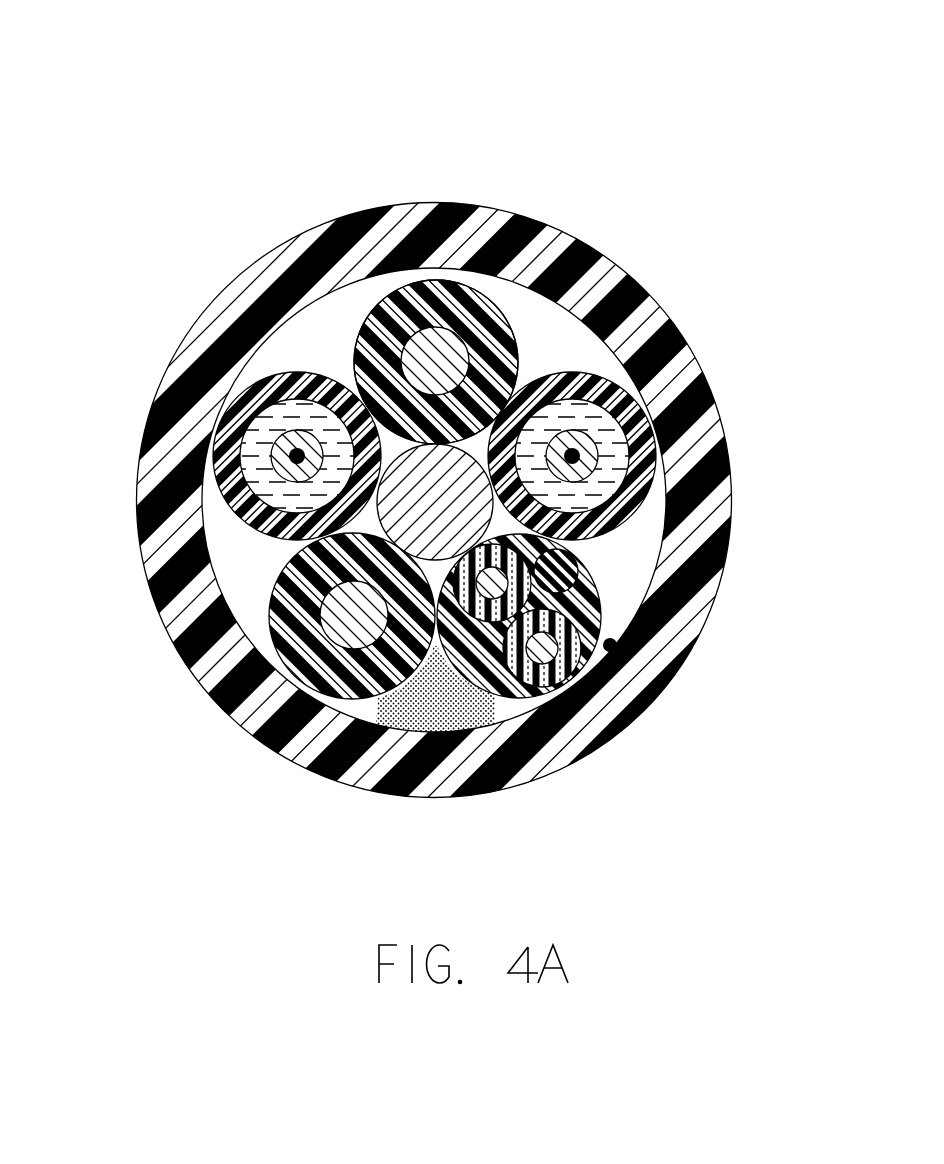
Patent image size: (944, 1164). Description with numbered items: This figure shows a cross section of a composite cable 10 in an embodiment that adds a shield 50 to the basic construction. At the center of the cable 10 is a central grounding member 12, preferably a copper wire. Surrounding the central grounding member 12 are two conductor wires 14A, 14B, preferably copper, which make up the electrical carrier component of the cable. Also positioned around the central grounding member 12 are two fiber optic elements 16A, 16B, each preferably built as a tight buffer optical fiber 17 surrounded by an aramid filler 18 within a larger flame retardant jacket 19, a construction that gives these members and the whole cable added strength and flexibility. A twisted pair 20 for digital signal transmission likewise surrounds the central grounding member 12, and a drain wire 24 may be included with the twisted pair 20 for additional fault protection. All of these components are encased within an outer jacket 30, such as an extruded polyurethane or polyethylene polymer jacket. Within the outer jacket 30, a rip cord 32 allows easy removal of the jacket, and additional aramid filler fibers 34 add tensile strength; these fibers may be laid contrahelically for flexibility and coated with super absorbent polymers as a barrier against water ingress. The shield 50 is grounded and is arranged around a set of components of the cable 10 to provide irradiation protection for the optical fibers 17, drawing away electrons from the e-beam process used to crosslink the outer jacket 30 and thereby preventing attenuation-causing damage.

The composite cable 10 is at (472, 582).
The central grounding member 12 is at (423, 472).
The conductor wire 14A is at (418, 290).
The conductor wire 14B is at (337, 620).
The fiber optic element 16A is at (647, 419).
The fiber optic element 16B is at (247, 408).
The tight buffer optical fiber 17 is at (587, 420).
The aramid filler 18 is at (472, 582).
The flame retardant jacket 19 is at (583, 432).
The twisted pair 20 is at (623, 640).
The drain wire 24 is at (578, 574).
The outer jacket 30 is at (472, 450).
The rip cord 32 is at (622, 655).
The aramid filler fibers 34 is at (440, 738).
The shield 50 is at (233, 506).